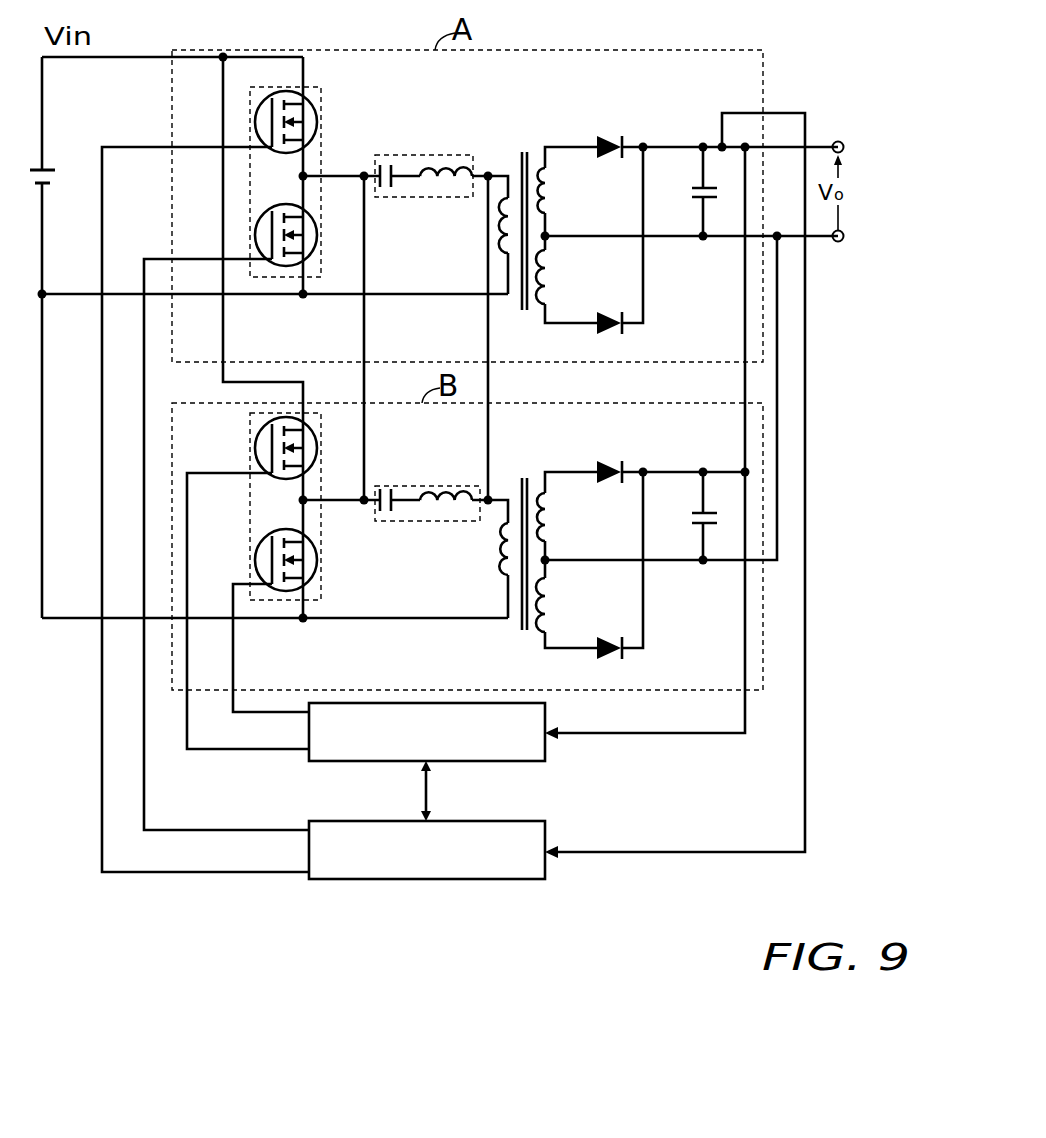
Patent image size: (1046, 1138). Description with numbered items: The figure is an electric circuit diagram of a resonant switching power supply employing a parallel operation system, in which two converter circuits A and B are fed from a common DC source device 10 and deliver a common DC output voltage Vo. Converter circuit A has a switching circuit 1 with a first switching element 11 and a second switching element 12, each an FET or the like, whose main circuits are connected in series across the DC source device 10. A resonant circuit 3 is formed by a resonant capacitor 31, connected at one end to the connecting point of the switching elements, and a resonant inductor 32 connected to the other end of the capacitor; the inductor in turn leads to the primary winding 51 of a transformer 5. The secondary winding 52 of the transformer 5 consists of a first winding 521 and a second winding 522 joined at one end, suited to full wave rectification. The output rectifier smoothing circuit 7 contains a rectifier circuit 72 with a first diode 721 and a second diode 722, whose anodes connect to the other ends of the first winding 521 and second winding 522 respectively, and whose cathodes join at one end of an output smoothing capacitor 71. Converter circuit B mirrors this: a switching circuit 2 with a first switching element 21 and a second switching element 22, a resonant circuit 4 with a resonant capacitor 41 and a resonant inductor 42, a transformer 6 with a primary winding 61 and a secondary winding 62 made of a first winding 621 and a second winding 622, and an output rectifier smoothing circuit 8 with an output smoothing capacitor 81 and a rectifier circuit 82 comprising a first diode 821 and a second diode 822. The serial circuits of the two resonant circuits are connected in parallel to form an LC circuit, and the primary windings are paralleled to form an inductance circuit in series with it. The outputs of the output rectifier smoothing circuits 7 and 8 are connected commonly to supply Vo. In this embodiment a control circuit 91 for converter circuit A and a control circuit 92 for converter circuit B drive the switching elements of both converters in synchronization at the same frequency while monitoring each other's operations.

The switching circuit 1 is at (321, 90).
The first switching element 11 is at (317, 122).
The second switching element 12 is at (317, 235).
The switching circuit 2 is at (250, 437).
The first switching element 21 is at (317, 448).
The second switching element 22 is at (317, 560).
The resonant circuit 3 is at (410, 197).
The resonant capacitor 31 is at (398, 157).
The resonant inductor 32 is at (456, 160).
The resonant circuit 4 is at (410, 521).
The resonant capacitor 41 is at (387, 484).
The resonant inductor 42 is at (446, 484).
The transformer 5 is at (522, 310).
The primary winding 51 is at (500, 226).
The secondary winding 52 is at (540, 163).
The first winding 521 is at (548, 185).
The second winding 522 is at (549, 268).
The transformer 6 is at (522, 630).
The primary winding 61 is at (500, 551).
The secondary winding 62 is at (540, 488).
The first winding 621 is at (548, 510).
The second winding 622 is at (549, 596).
The output rectifier smoothing circuit 7 is at (662, 126).
The output smoothing capacitor 71 is at (694, 192).
The rectifier circuit 72 is at (596, 226).
The first diode 721 is at (606, 136).
The second diode 722 is at (606, 312).
The output rectifier smoothing circuit 8 is at (662, 451).
The output smoothing capacitor 81 is at (694, 518).
The rectifier circuit 82 is at (596, 551).
The first diode 821 is at (606, 461).
The second diode 822 is at (606, 637).
The DC source device 10 is at (52, 178).
The control circuit 91 is at (545, 866).
The control circuit 92 is at (545, 748).